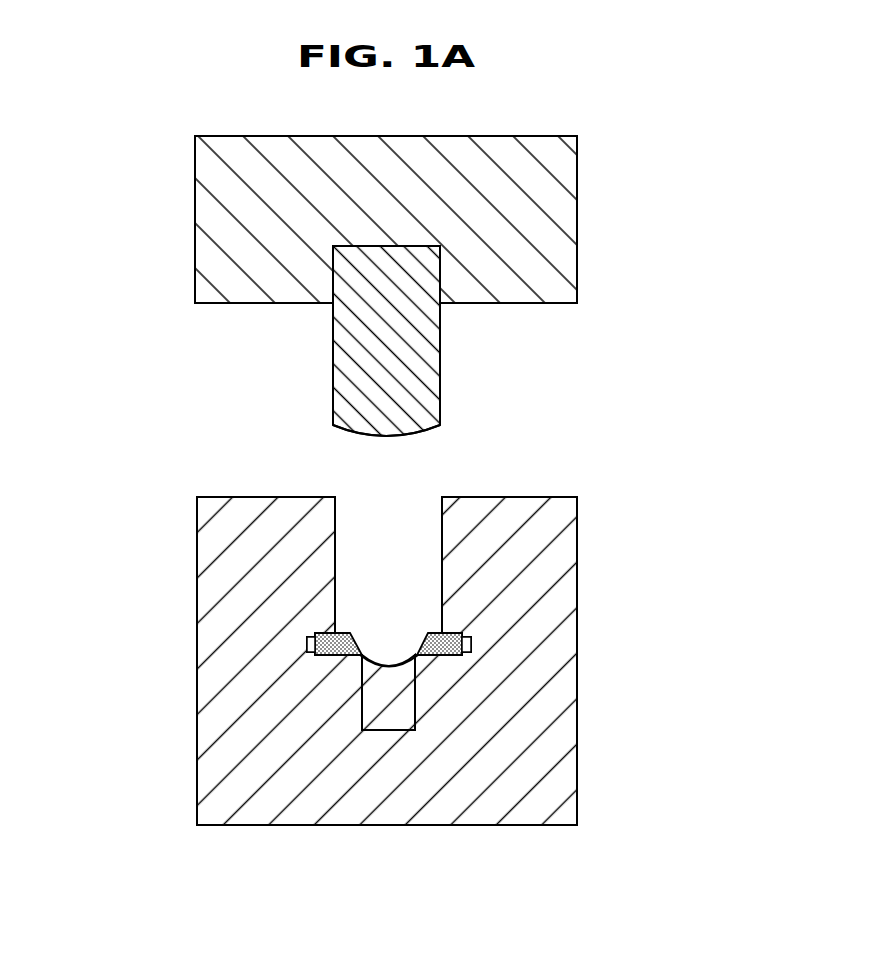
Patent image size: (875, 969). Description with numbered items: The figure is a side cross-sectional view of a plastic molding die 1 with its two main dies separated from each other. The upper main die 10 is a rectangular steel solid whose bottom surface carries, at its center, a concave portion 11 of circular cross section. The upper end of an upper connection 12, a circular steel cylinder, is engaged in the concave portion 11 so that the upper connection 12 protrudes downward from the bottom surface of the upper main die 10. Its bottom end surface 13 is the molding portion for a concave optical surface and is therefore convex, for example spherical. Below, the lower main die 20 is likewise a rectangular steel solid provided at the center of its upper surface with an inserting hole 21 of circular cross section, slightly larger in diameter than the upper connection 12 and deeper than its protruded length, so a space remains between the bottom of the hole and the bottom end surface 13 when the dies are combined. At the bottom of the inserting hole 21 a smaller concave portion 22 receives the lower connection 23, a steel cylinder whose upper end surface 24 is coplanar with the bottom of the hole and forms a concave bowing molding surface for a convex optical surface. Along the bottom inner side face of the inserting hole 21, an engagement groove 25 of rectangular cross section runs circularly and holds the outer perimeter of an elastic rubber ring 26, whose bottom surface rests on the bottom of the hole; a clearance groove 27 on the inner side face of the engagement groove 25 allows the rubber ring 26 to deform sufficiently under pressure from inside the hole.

The plastic molding die 1 is at (603, 328).
The upper main die 10 is at (560, 172).
The concave portion 11 is at (333, 272).
The upper connection 12 is at (430, 382).
The bottom end surface 13 is at (432, 437).
The lower main die 20 is at (563, 710).
The inserting hole 21 is at (442, 528).
The concave portion 22 is at (363, 705).
The lower connection 23 is at (393, 717).
The upper end surface 24 is at (388, 664).
The engagement groove 25 is at (467, 656).
The rubber ring 26 is at (457, 632).
The clearance groove 27 is at (470, 644).